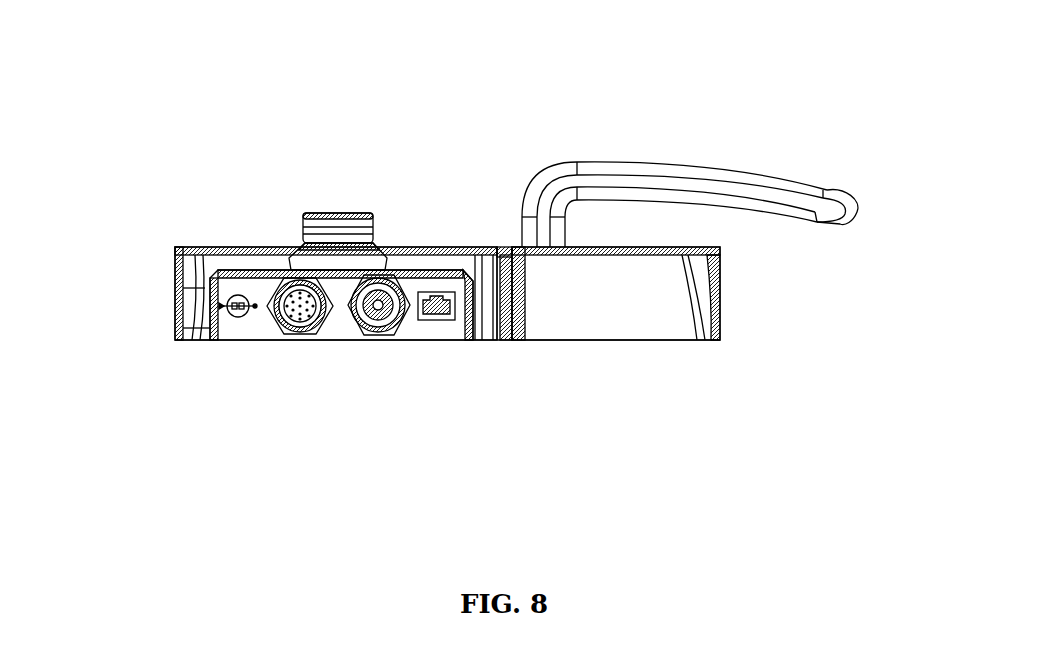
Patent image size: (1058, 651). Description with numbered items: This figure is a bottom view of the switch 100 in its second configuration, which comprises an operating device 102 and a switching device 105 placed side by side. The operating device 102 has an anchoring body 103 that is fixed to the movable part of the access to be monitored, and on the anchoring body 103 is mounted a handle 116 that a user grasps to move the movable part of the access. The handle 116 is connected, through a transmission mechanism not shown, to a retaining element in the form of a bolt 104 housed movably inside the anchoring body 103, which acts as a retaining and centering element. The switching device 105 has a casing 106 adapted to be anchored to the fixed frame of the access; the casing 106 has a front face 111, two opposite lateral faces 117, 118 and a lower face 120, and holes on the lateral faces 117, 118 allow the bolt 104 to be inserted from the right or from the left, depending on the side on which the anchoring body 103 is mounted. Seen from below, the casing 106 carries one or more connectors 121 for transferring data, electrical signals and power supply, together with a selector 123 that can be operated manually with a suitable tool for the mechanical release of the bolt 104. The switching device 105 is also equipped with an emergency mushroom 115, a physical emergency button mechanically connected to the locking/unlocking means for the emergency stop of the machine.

The switch 100 is at (150, 116).
The operating device 102 is at (775, 299).
The anchoring body 103 is at (638, 325).
The bolt 104 is at (507, 248).
The switching device 105 is at (157, 357).
The casing 106 is at (175, 250).
The front face 111 is at (231, 247).
The emergency mushroom 115 is at (348, 213).
The handle 116 is at (708, 180).
The lateral face 117 is at (507, 341).
The lateral face 118 is at (176, 313).
The lower face 120 is at (221, 334).
The connectors 121 is at (273, 363).
The selector 123 is at (240, 313).